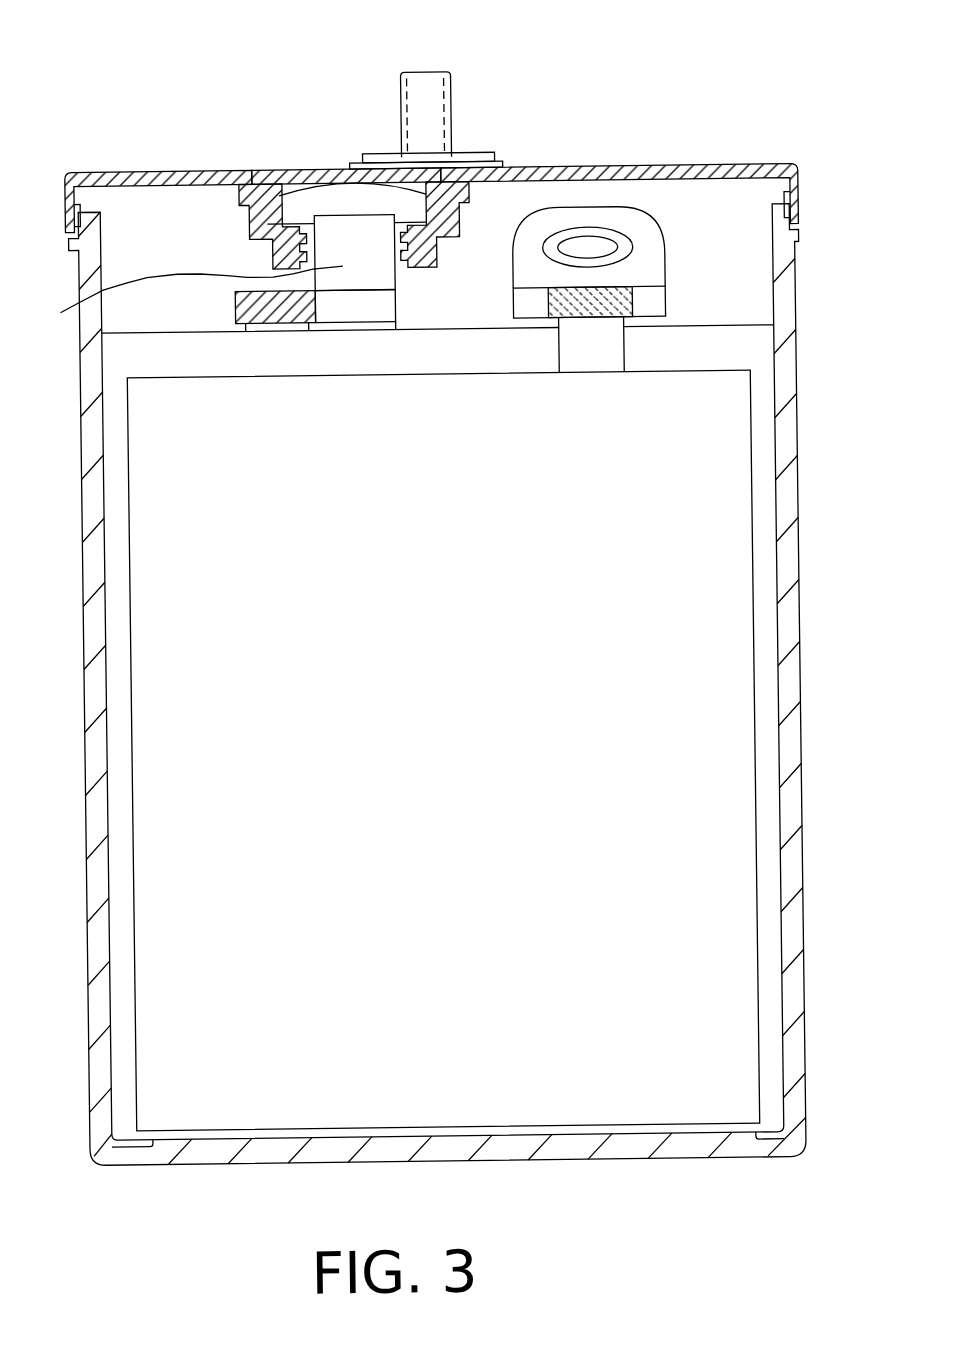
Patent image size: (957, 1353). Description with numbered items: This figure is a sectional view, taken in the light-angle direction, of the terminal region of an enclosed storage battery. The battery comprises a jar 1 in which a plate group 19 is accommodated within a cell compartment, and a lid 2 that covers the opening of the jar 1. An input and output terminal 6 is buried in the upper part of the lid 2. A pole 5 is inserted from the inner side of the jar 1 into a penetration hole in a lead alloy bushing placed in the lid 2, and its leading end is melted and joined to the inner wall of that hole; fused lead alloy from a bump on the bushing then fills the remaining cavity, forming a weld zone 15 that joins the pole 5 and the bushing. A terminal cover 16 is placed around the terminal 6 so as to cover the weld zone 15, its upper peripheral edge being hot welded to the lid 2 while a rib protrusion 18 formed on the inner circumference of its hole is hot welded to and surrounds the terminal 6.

The jar 1 is at (787, 375).
The lid 2 is at (782, 179).
The pole 5 is at (65, 308).
The input and output terminal 6 is at (396, 150).
The weld zone 15 is at (343, 198).
The terminal cover 16 is at (283, 171).
The rib protrusion 18 is at (509, 157).
The plate group 19 is at (718, 705).